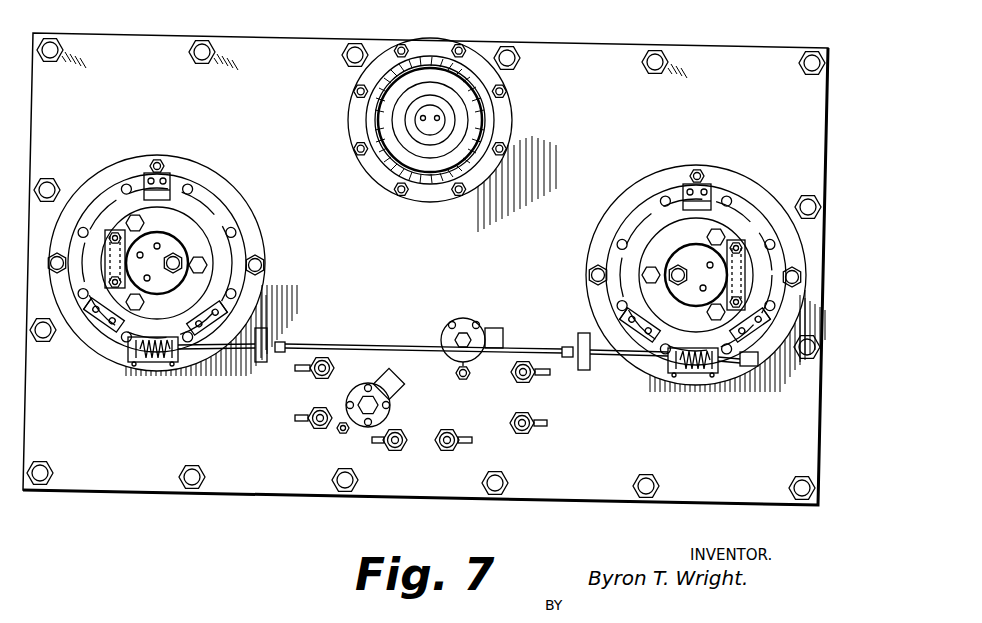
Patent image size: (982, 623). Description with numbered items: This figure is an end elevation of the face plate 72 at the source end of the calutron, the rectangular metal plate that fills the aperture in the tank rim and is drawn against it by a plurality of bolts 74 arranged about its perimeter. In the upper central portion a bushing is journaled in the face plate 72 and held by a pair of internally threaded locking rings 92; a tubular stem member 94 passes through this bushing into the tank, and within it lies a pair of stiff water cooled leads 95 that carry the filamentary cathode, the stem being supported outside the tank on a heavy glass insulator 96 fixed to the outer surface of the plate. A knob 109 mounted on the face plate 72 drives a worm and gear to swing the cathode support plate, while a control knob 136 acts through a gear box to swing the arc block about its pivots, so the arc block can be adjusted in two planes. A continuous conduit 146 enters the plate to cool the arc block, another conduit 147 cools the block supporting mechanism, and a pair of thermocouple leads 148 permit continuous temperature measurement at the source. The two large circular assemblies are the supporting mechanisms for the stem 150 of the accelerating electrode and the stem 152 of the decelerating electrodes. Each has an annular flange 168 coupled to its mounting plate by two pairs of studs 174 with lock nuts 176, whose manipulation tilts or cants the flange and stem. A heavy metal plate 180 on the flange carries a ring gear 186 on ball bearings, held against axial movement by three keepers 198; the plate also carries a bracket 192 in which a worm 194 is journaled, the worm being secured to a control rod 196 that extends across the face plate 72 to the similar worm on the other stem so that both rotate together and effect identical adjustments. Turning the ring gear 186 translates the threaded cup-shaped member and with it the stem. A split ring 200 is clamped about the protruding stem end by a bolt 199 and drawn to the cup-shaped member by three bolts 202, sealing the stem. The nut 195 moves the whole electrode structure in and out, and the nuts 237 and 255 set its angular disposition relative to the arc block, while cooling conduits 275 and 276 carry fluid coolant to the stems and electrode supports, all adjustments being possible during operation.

The face plate 72 is at (128, 34).
The bolts 74 is at (207, 40).
The locking rings 92 is at (467, 118).
The stem member 94 is at (421, 117).
The water cooled leads 95 is at (426, 124).
The glass insulator 96 is at (483, 108).
The knob 109 is at (468, 320).
The control knob 136 is at (378, 405).
The conduit 146 is at (438, 450).
The conduit 147 is at (311, 377).
The thermocouple leads 148 is at (312, 429).
The stem 150 is at (642, 208).
The stem 152 is at (190, 262).
The annular flange 168 is at (607, 222).
The studs 174 is at (703, 182).
The lock nuts 176 is at (695, 170).
The metal plate 180 is at (628, 220).
The ring gear 186 is at (702, 291).
The bracket 192 is at (690, 376).
The worm 194 is at (673, 377).
The nut 195 is at (752, 368).
The control rod 196 is at (380, 345).
The keepers 198 is at (718, 229).
The bolt 199 is at (740, 246).
The split ring 200 is at (681, 220).
The bolts 202 is at (734, 243).
The nut 237 is at (667, 271).
The nut 255 is at (178, 258).
The conduit 275 is at (708, 268).
The conduit 276 is at (149, 275).